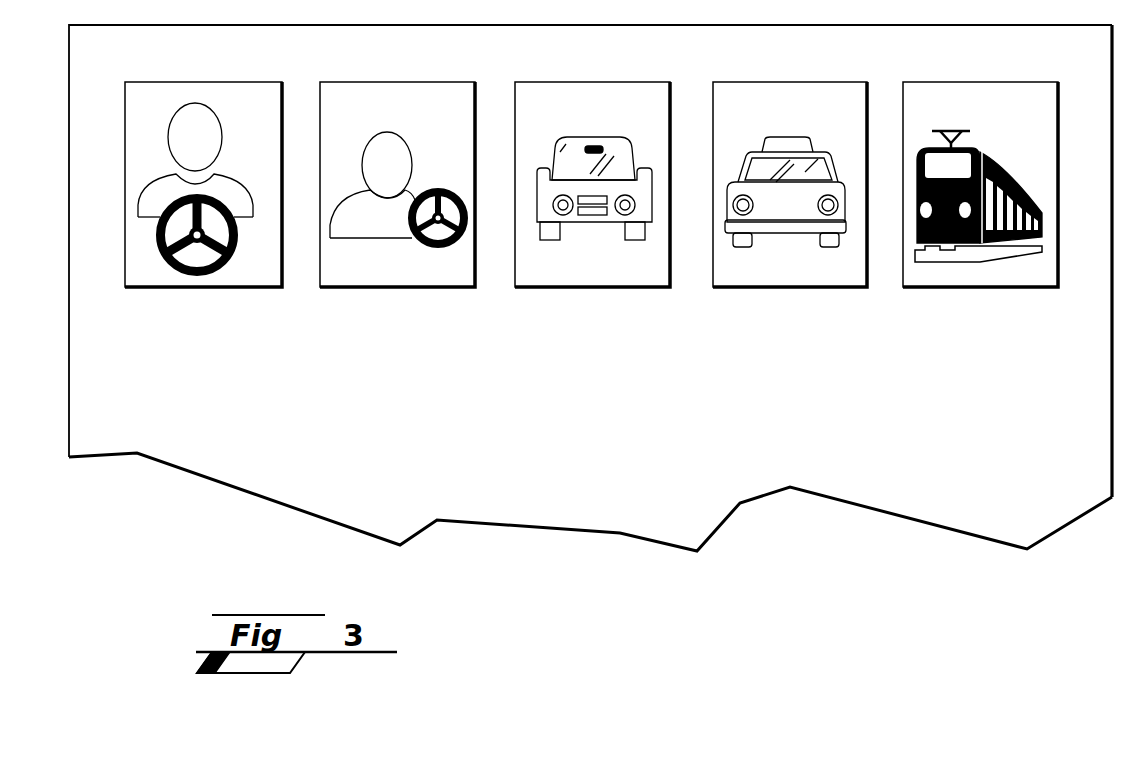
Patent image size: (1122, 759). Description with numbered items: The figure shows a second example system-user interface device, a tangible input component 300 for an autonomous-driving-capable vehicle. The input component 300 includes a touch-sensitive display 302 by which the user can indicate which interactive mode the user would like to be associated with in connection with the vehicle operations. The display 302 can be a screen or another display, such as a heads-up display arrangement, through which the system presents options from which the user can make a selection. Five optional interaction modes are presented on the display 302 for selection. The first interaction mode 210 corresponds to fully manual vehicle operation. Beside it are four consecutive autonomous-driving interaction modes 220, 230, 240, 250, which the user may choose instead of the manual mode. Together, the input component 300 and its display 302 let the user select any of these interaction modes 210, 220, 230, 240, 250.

The first interaction mode 210 is at (203, 287).
The autonomous-driving interaction mode 220 is at (397, 287).
The autonomous-driving interaction mode 230 is at (603, 287).
The autonomous-driving interaction mode 240 is at (777, 287).
The autonomous-driving interaction mode 250 is at (990, 287).
The input component 300 is at (905, 560).
The touch-sensitive display 302 is at (617, 477).